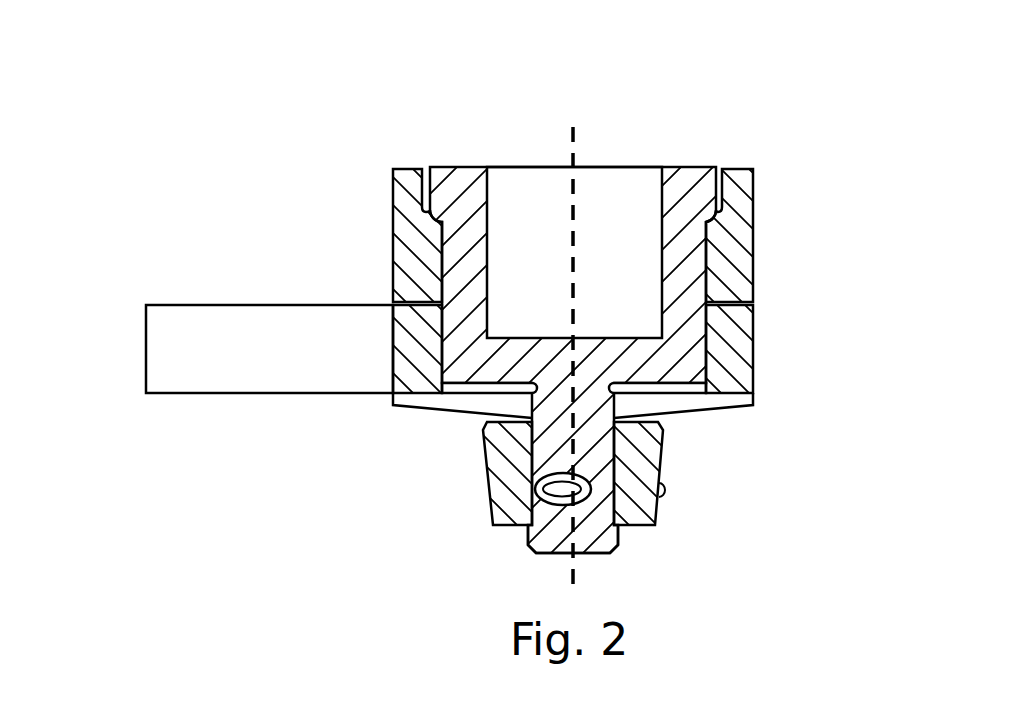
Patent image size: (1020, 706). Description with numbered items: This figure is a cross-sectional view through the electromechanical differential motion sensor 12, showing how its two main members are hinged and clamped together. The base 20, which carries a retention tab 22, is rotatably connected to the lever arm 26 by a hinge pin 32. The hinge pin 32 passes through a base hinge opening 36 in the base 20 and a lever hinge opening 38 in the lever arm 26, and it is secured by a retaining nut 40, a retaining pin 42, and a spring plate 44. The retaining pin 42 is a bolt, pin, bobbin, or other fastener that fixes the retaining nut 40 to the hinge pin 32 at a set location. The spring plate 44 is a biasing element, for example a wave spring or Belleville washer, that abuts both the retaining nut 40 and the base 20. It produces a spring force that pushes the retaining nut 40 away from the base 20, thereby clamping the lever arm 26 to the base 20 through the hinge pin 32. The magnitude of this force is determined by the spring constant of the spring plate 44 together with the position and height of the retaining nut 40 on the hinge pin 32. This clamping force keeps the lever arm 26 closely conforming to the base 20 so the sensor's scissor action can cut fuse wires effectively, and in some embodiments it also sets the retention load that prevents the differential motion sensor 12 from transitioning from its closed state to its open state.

The differential motion sensor 12 is at (765, 68).
The base 20 is at (146, 350).
The retention tab 22 is at (208, 303).
The lever arm 26 is at (732, 256).
The hinge pin 32 is at (692, 182).
The base hinge opening 36 is at (727, 340).
The lever hinge opening 38 is at (392, 247).
The retaining nut 40 is at (660, 468).
The retaining pin 42 is at (515, 528).
The spring plate 44 is at (447, 412).